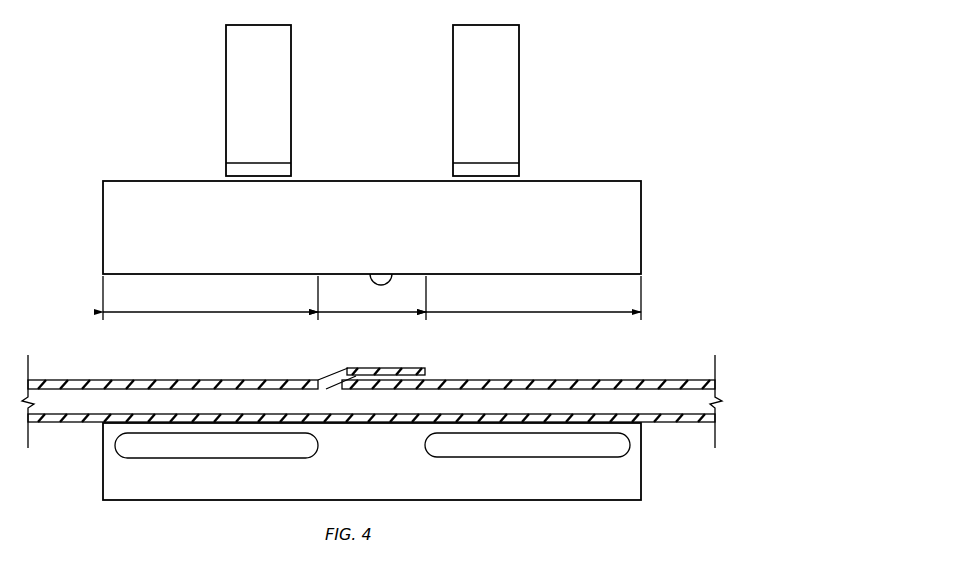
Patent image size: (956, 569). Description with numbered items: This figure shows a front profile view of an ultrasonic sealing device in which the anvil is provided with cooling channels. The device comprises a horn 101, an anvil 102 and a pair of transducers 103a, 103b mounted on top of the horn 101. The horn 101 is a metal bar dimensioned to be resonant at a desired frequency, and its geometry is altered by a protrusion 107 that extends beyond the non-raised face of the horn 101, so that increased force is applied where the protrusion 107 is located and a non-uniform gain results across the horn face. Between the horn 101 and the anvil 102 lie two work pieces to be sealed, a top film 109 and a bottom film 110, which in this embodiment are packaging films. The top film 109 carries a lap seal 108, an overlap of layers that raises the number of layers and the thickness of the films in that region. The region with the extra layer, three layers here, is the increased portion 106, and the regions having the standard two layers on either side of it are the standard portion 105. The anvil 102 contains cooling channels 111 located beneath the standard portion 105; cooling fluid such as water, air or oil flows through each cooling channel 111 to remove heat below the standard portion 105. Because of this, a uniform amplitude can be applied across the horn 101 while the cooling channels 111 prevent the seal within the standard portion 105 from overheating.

The horn 101 is at (103, 228).
The anvil 102 is at (103, 457).
The transducer 103a is at (226, 100).
The transducer 103b is at (519, 100).
The standard portion 105 is at (228, 316).
The increased portion 106 is at (362, 316).
The protrusion 107 is at (391, 272).
The lap seal 108 is at (416, 368).
The top film 109 is at (90, 380).
The bottom film 110 is at (378, 423).
The cooling channel 111 is at (183, 447).